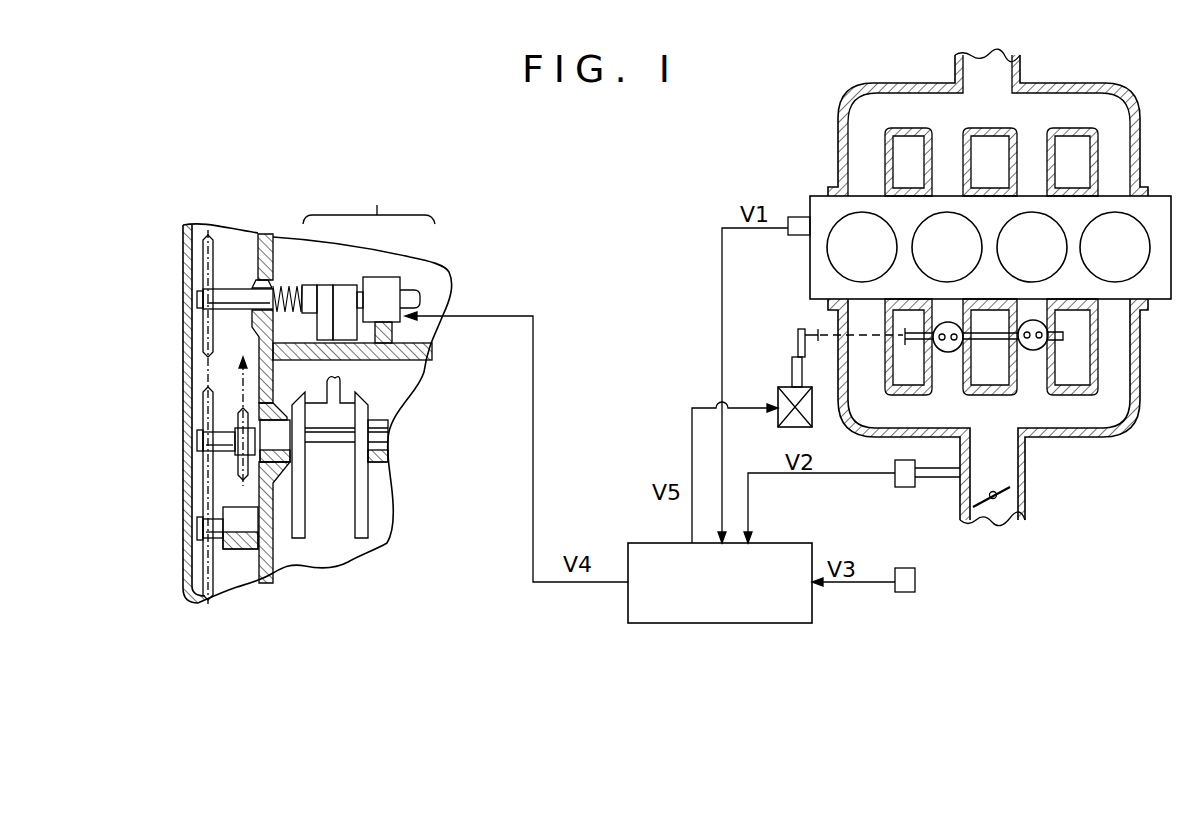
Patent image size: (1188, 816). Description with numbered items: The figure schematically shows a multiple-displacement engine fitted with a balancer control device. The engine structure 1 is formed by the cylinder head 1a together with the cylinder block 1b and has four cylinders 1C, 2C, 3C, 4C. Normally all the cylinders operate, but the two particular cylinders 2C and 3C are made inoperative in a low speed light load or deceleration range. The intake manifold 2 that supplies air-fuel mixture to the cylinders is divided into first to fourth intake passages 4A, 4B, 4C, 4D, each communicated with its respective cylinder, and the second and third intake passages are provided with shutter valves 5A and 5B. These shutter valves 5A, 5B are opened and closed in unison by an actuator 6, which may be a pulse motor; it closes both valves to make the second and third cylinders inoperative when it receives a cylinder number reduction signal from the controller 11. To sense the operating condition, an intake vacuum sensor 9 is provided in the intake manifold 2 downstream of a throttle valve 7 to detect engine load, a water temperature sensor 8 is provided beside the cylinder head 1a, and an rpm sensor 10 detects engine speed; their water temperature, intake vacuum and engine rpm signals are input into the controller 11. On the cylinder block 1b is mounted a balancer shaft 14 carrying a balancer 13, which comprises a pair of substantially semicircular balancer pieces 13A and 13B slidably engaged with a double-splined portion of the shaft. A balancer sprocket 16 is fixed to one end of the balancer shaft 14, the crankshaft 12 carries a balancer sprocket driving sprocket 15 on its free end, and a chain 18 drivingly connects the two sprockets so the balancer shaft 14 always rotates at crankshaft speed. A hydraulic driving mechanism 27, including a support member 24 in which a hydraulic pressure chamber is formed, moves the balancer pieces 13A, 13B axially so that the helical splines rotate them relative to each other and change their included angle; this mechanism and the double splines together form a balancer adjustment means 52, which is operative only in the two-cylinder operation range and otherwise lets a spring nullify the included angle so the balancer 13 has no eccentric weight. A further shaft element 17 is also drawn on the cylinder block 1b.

The engine structure 1 is at (812, 186).
The cylinder head 1a is at (823, 273).
The cylinder block 1b is at (273, 263).
The first cylinder 1C is at (848, 262).
The second cylinder 2C is at (933, 262).
The third cylinder 3C is at (1018, 262).
The fourth cylinder / third intake passage 4C is at (1101, 262).
The intake manifold 2 is at (1090, 440).
The first intake passage 4A is at (872, 370).
The second intake passage 4B is at (947, 375).
The fourth intake passage 4D is at (1113, 353).
The shutter valve 5A is at (948, 322).
The shutter valve 5B is at (1033, 320).
The actuator 6 is at (780, 428).
The throttle valve 7 is at (982, 522).
The water temperature sensor 8 is at (790, 238).
The intake vacuum sensor 9 is at (907, 487).
The rpm sensor 10 is at (915, 586).
The controller 11 is at (727, 624).
The crankshaft 12 is at (380, 443).
The balancer 13 is at (368, 246).
The balancer piece 13A is at (322, 298).
The balancer piece 13B is at (346, 297).
The balancer shaft 14 is at (222, 290).
The balancer sprocket driving sprocket 15 is at (202, 408).
The balancer sprocket 16 is at (206, 238).
The shaft 17 is at (200, 560).
The chain 18 is at (205, 372).
The support member 24 is at (388, 303).
The hydraulic driving mechanism 27 is at (437, 302).
The balancer adjustment means 52 is at (539, 296).